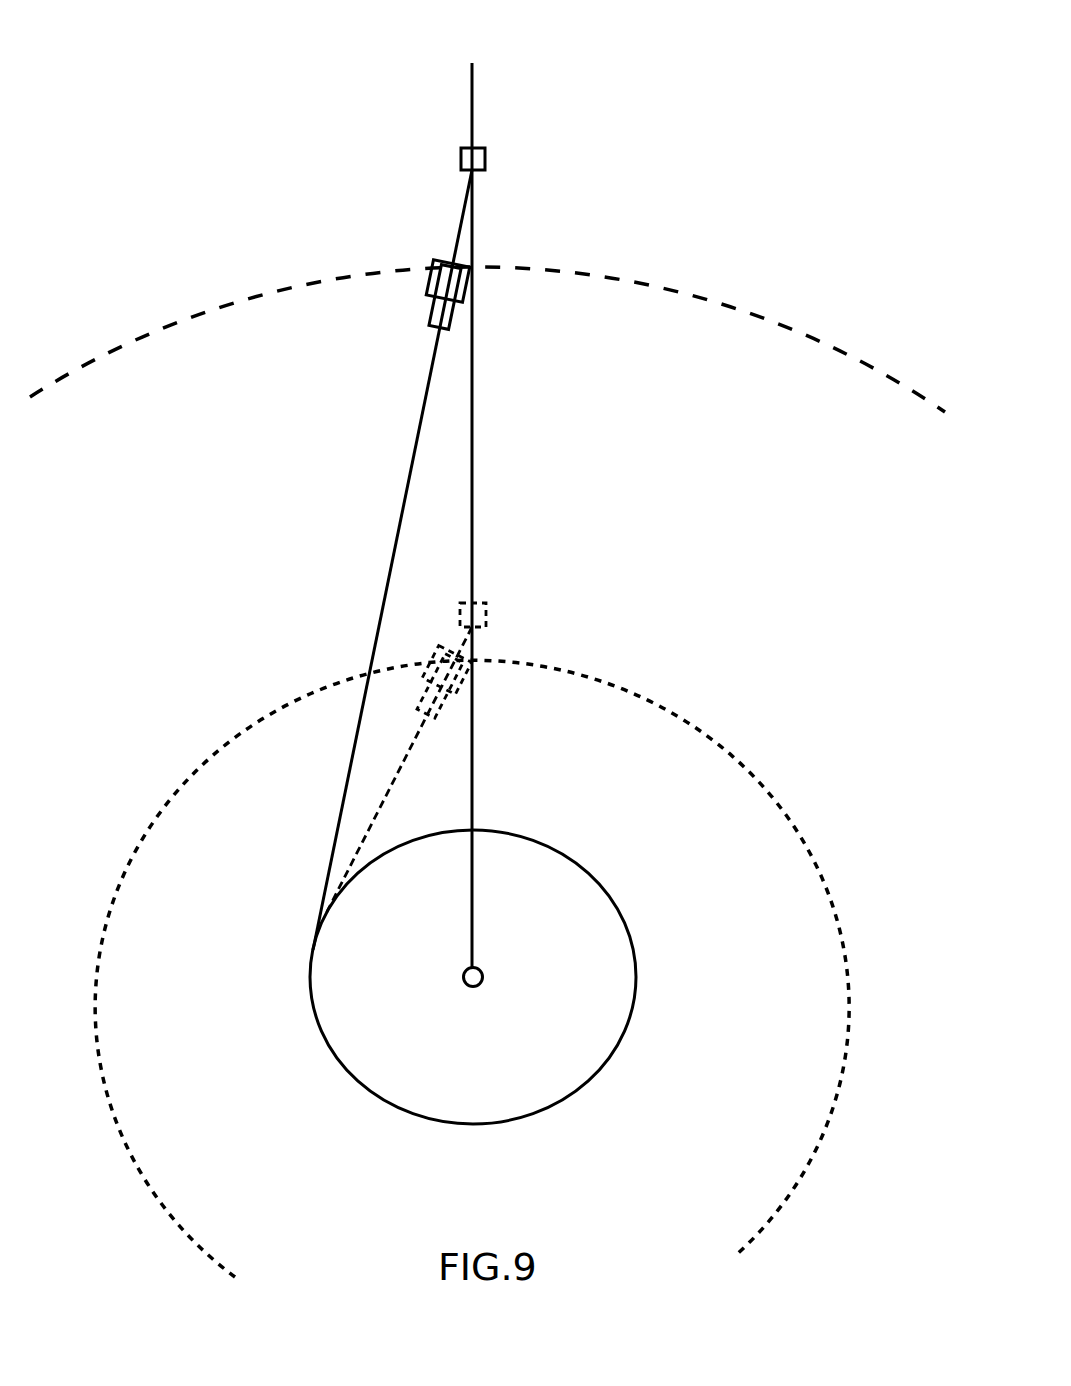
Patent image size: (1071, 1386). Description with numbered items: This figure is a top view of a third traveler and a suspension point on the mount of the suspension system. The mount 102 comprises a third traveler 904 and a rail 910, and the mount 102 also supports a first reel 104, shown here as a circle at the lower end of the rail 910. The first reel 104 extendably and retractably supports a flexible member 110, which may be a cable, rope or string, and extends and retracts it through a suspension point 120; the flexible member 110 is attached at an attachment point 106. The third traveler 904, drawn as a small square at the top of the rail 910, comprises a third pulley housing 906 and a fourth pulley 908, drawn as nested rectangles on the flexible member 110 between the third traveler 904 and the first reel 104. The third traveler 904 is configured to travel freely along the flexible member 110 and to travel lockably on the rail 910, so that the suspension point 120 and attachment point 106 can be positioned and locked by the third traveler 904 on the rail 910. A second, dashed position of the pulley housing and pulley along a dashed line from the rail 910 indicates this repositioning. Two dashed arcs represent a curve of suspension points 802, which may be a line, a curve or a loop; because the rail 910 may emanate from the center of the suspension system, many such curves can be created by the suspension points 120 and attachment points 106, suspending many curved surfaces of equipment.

The mount 102 is at (170, 114).
The third traveler 904 is at (462, 148).
The attachment point 106 is at (397, 265).
The suspension point 120 is at (438, 262).
The third pulley housing 906 is at (432, 272).
The fourth pulley 908 is at (430, 318).
The curve of suspension points 802 is at (705, 298).
The flexible member 110 is at (400, 512).
The rail 910 is at (475, 740).
The first reel 104 is at (610, 888).